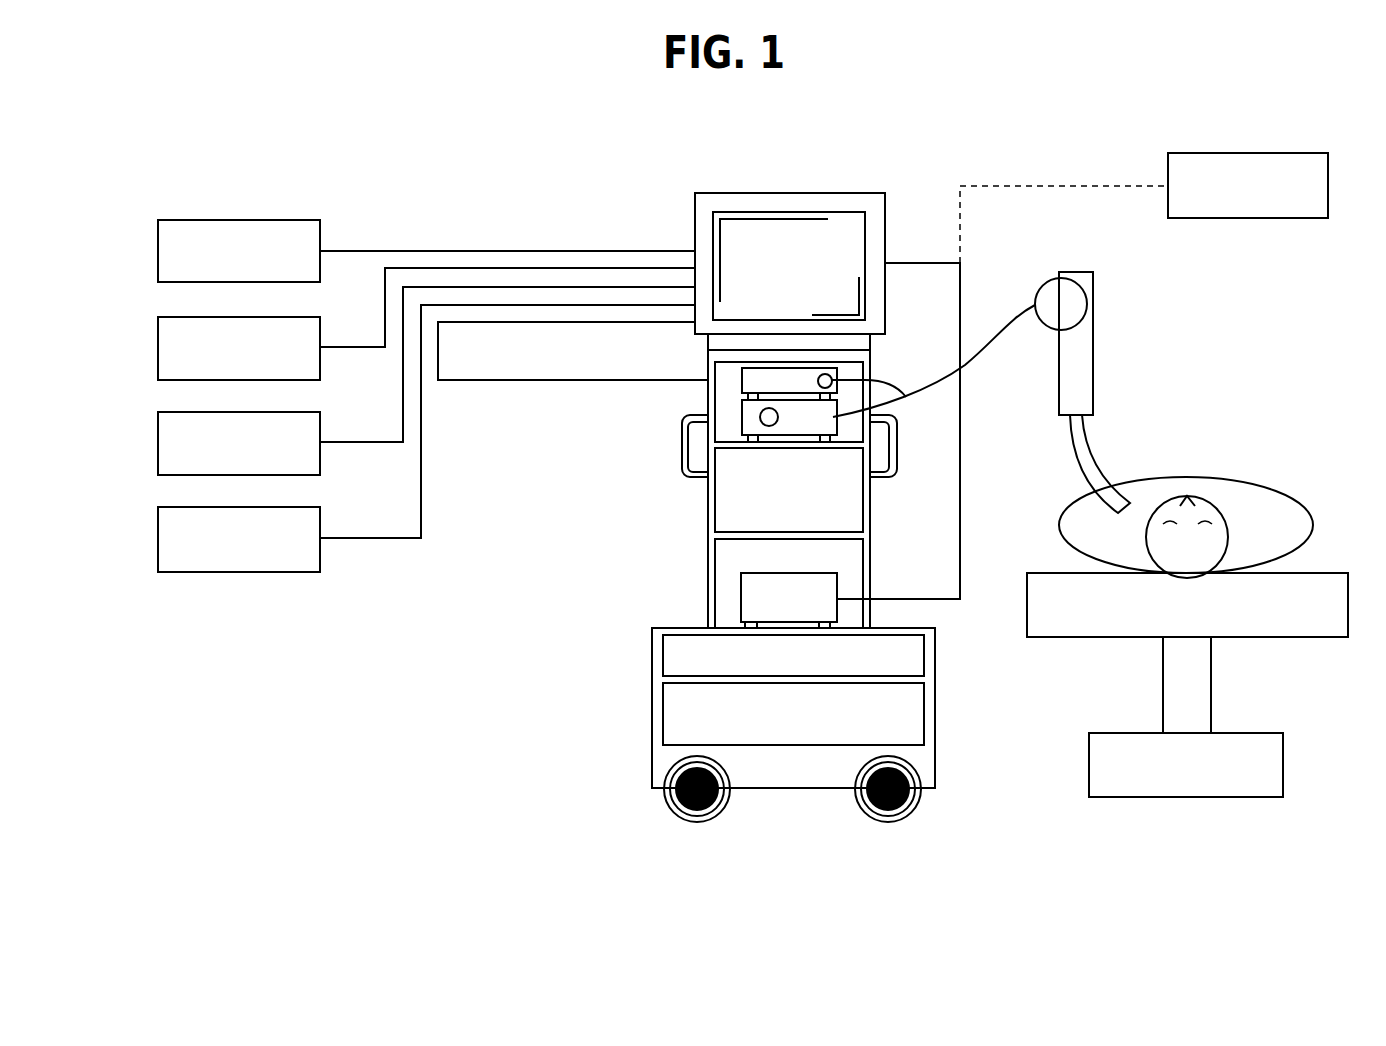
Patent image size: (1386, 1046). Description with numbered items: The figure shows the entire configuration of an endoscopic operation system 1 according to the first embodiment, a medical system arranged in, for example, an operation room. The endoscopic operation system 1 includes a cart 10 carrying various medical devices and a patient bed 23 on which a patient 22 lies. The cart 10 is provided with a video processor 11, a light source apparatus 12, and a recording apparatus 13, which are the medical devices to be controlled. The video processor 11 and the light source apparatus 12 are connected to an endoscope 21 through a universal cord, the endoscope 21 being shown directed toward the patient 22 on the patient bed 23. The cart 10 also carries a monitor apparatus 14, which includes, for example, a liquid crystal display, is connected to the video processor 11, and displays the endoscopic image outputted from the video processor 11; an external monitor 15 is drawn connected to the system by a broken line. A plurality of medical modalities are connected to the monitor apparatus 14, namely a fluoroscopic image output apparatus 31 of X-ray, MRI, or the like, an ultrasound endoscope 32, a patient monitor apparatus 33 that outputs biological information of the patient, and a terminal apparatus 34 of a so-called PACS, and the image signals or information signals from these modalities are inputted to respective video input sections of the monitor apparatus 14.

The endoscopic operation system 1 is at (940, 156).
The cart 10 is at (558, 670).
The video processor 11 is at (753, 385).
The light source apparatus 12 is at (750, 425).
The recording apparatus 13 is at (765, 592).
The monitor apparatus 14 is at (790, 193).
The external monitor 15 is at (1248, 152).
The endoscope 21 is at (1108, 303).
The patient 22 is at (1257, 485).
The patient bed 23 is at (1053, 639).
The fluoroscopic image output apparatus 31 is at (158, 252).
The ultrasound endoscope 32 is at (158, 348).
The patient monitor apparatus 33 is at (158, 444).
The terminal apparatus 34 is at (158, 540).